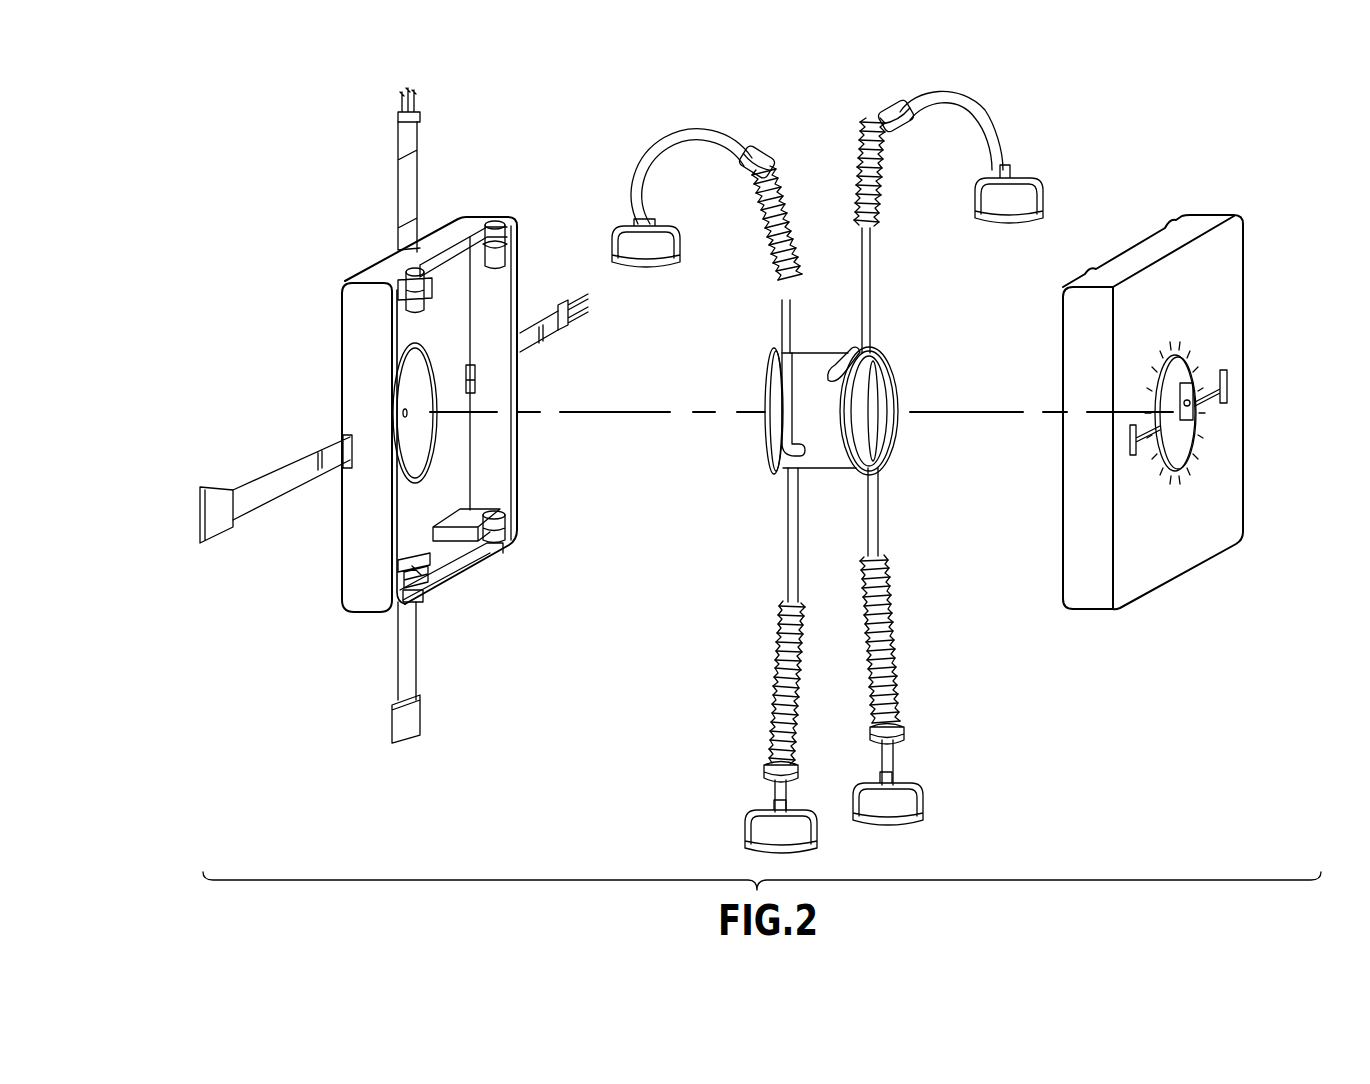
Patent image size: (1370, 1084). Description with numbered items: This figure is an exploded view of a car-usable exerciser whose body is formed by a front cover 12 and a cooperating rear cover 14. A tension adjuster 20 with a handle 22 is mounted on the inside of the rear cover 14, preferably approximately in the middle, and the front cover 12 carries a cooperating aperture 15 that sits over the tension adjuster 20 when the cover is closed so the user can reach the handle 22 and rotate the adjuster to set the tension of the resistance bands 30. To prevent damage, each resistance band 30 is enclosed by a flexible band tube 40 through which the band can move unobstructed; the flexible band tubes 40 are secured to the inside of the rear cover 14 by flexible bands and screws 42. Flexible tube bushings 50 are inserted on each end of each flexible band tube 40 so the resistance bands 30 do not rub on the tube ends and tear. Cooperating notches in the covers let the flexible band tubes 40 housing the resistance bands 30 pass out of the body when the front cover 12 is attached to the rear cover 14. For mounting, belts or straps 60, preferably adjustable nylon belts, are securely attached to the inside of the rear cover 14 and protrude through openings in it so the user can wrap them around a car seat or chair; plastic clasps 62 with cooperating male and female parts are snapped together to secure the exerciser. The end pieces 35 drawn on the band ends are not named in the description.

The front cover 12 is at (1232, 287).
The rear cover 14 is at (342, 368).
The aperture 15 is at (1185, 444).
The tension adjuster 20 is at (818, 355).
The handle 22 is at (882, 392).
The resistance band 30 is at (658, 162).
The cap 35 is at (635, 228).
The flexible band tube 40 is at (780, 190).
The flexible bands and screws 42 is at (505, 245).
The flexible tube bushing 50 is at (772, 158).
The belt or strap 60 is at (405, 181).
The clasp 62 is at (405, 105).